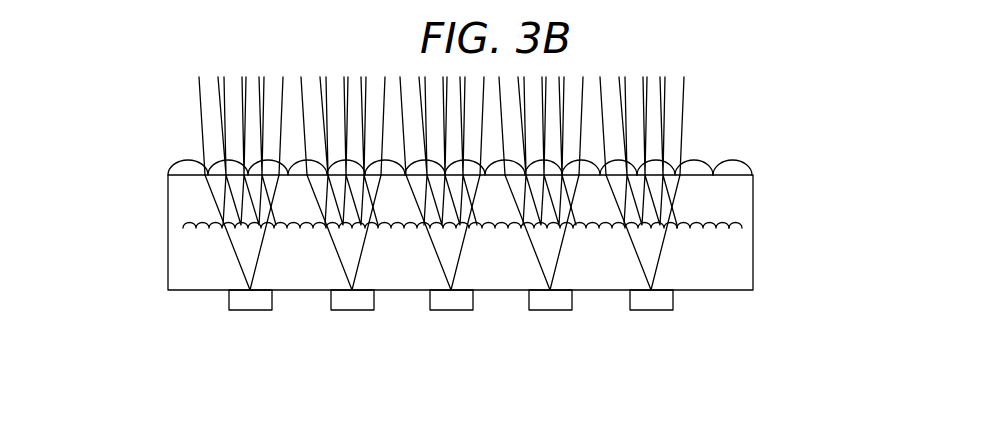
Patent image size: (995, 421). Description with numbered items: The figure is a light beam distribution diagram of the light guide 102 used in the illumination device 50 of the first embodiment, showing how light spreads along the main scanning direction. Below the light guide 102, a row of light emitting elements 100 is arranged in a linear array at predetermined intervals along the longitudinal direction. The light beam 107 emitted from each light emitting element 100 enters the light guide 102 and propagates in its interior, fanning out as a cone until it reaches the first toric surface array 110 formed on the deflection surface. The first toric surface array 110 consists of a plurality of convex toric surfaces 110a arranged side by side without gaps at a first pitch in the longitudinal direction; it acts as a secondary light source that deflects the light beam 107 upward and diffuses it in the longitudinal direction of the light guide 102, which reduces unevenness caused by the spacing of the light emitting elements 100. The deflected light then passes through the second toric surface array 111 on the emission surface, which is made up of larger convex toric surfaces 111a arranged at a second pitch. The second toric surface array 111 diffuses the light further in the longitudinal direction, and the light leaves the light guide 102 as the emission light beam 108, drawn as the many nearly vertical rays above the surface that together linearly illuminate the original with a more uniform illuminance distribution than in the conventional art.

The illumination device 50 is at (453, 232).
The light emitting element 100 is at (252, 310).
The light guide 102 is at (753, 248).
The light beam 107 is at (633, 260).
The emission light beam 108 is at (682, 103).
The first toric surface array 110 is at (730, 218).
The convex toric surface 110a is at (680, 222).
The second toric surface array 111 is at (734, 161).
The convex toric surface 111a is at (676, 158).